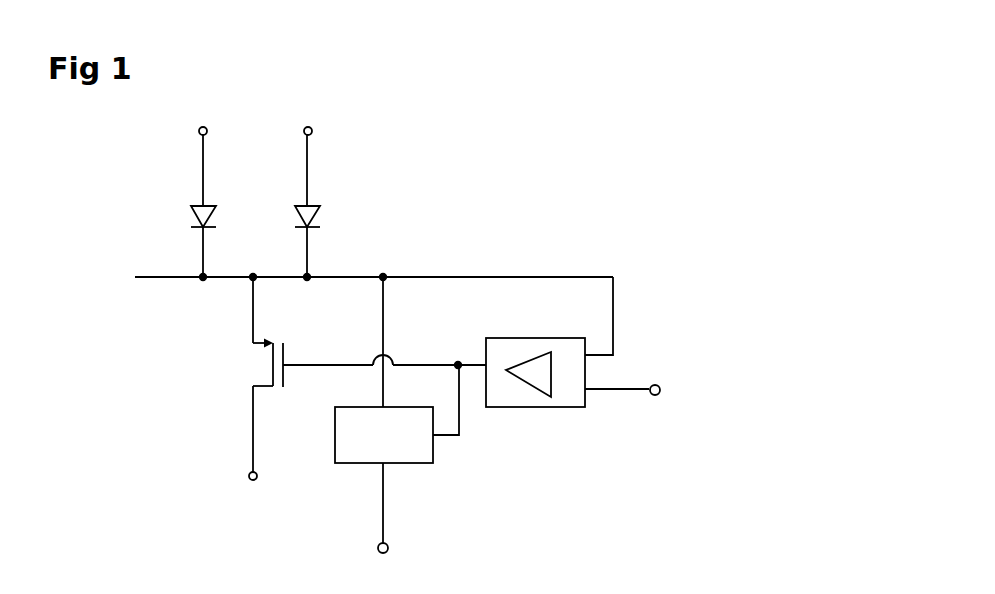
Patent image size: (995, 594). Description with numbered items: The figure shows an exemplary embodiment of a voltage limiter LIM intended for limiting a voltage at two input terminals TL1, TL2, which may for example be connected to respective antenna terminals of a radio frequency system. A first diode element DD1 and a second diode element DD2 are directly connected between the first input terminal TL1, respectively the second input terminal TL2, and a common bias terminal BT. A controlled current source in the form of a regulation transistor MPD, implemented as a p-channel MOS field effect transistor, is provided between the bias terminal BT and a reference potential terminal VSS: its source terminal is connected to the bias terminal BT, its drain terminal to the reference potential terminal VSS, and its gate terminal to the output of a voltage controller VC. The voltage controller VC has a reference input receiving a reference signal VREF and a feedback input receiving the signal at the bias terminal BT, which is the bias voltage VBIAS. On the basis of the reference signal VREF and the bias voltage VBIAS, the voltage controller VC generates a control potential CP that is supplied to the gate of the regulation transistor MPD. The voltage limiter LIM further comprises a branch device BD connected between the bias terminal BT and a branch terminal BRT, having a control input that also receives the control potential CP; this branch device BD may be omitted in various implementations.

The voltage limiter LIM is at (674, 136).
The first input terminal TL1 is at (207, 134).
The second input terminal TL2 is at (312, 134).
The first diode element DD1 is at (200, 225).
The second diode element DD2 is at (313, 225).
The bias terminal BT is at (362, 269).
The bias voltage VBIAS is at (568, 304).
The regulation transistor MPD is at (253, 347).
The control potential CP is at (384, 350).
The reference potential terminal VSS is at (249, 476).
The voltage controller VC is at (538, 410).
The reference signal VREF is at (689, 391).
The branch device BD is at (415, 467).
The branch terminal BRT is at (388, 545).